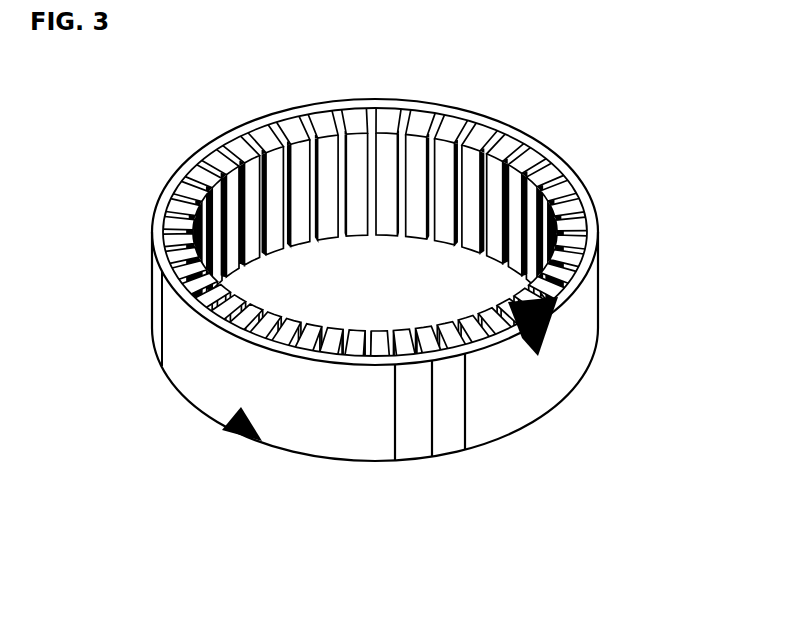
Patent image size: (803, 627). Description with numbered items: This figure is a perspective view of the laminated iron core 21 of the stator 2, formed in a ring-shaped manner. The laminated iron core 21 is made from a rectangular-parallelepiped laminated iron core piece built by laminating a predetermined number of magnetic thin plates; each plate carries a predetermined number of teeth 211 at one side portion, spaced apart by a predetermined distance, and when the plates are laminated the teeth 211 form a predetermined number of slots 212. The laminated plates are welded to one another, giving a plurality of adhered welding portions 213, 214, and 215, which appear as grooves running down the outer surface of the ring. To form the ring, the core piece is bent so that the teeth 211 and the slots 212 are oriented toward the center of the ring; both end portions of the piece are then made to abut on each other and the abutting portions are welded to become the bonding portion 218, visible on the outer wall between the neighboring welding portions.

The stator 2 is at (317, 107).
The laminated iron core 21 is at (588, 198).
The teeth 211 is at (518, 163).
The slots 212 is at (513, 170).
The adhered welding portion 213 is at (395, 458).
The adhered welding portion 214 is at (161, 366).
The adhered welding portion 215 is at (465, 448).
The bonding portion 218 is at (432, 455).